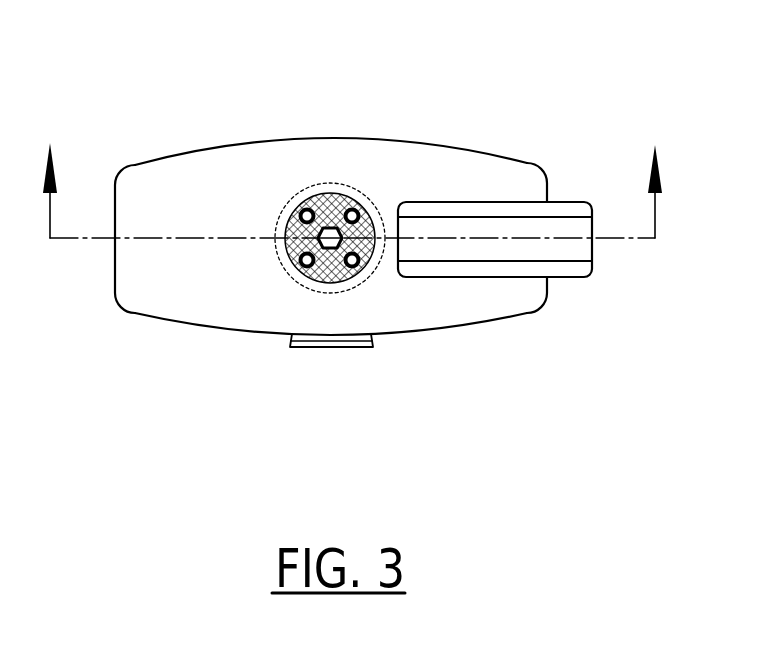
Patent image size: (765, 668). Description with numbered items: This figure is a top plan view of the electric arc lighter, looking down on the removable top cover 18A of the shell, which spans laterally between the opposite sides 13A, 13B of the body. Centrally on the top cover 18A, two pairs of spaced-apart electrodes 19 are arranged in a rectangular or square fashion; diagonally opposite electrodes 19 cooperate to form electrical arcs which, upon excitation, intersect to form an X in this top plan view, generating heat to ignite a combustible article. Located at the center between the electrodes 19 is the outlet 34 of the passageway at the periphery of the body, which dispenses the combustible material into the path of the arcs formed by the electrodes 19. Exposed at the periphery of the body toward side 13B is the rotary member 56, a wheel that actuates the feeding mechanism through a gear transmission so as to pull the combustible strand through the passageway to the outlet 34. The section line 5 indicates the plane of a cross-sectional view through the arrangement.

The section line 5- 5 is at (355, 168).
The side of the body 13A is at (115, 273).
The side of the body 13B is at (547, 289).
The top cover 18A is at (170, 168).
The electrodes 19 is at (300, 210).
The outlet 34 is at (327, 214).
The rotary member 56 is at (595, 270).